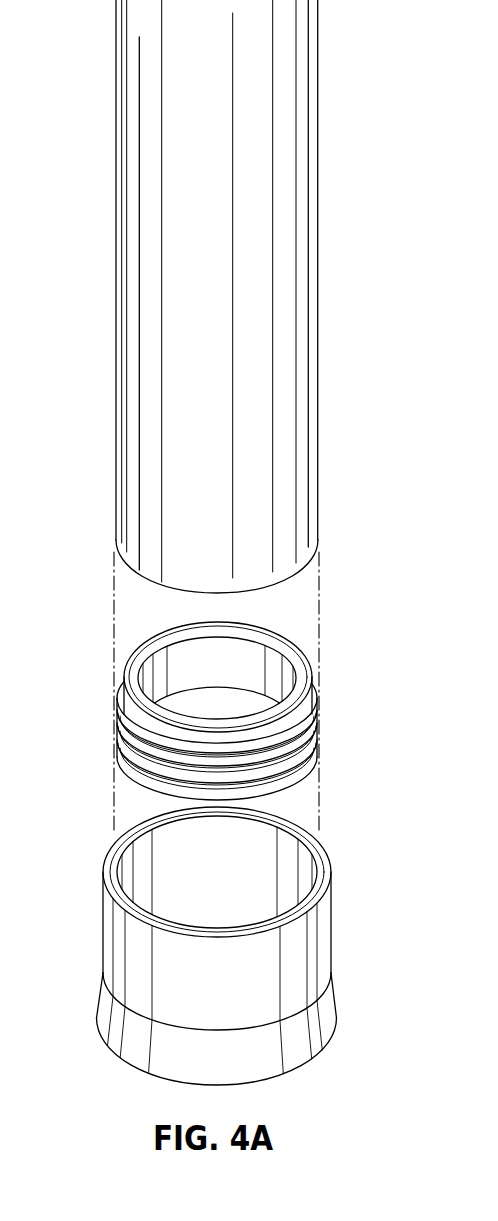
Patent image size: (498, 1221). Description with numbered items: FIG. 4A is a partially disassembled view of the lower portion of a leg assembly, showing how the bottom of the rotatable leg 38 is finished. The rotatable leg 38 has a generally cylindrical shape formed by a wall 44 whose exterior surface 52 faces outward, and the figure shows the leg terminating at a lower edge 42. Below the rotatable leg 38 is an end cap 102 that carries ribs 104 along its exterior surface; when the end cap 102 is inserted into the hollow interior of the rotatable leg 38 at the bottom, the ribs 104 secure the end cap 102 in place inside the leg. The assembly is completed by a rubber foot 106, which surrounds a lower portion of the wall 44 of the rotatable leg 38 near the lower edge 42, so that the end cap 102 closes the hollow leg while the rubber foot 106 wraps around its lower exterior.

The rotatable leg 38 is at (325, 313).
The wall 44 is at (310, 350).
The exterior surface 52 is at (148, 373).
The lower edge 42 is at (291, 573).
The ribs 104 is at (312, 679).
The end cap 102 is at (310, 774).
The rubber foot 106 is at (334, 925).